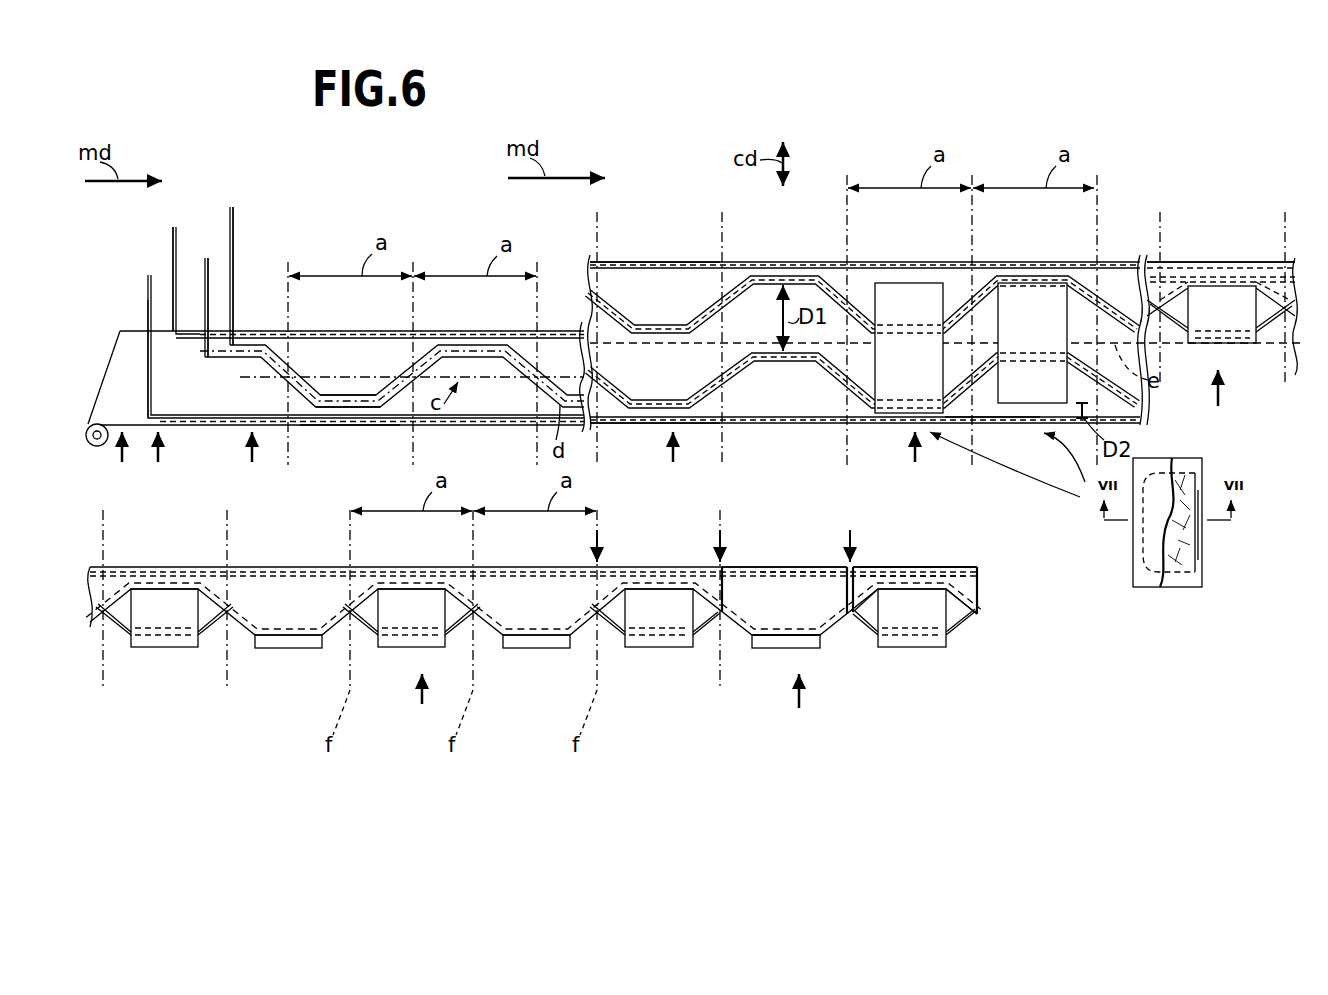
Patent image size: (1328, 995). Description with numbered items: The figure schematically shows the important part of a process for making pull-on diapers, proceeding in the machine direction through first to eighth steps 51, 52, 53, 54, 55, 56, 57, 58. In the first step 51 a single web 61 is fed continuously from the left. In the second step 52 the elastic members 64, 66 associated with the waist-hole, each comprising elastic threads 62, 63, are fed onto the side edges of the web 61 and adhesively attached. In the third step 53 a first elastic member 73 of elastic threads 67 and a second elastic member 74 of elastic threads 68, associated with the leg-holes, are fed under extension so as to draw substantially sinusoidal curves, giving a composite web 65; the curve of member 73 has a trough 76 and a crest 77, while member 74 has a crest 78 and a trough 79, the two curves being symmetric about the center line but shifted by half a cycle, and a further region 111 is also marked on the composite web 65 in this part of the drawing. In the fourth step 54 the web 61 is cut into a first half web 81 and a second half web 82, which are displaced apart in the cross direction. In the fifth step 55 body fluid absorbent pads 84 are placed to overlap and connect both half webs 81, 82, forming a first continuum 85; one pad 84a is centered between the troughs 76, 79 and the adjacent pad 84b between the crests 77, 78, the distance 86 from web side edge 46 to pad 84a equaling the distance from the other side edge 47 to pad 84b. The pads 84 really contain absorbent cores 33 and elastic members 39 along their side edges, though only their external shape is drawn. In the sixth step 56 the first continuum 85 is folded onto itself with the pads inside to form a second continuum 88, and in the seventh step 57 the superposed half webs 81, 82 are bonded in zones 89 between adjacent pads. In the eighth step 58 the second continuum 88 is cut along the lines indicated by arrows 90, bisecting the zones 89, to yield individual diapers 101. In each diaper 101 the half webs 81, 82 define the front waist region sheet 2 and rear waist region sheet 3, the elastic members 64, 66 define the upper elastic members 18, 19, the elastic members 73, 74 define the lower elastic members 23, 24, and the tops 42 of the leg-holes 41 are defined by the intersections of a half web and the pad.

The diaper 101 is at (982, 562).
The front waist region sheet 2 is at (962, 582).
The rear waist region sheet 3 is at (765, 582).
The upper elastic member 18 is at (882, 558).
The upper elastic member 19 is at (805, 558).
The lower elastic member 23 is at (983, 574).
The lower elastic member 24 is at (766, 628).
The body fluid absorbent core 33 is at (1184, 586).
The elastic member 39 is at (1200, 545).
The leg-hole 41 is at (870, 622).
The top of leg-hole 42 is at (958, 612).
The web side edge 46 is at (238, 331).
The web side edge 47 is at (180, 426).
The first step 51 is at (122, 465).
The second step 52 is at (156, 465).
The third step 53 is at (252, 465).
The fourth step 54 is at (671, 464).
The fifth step 55 is at (915, 464).
The sixth step 56 is at (1218, 403).
The seventh step 57 is at (422, 702).
The eighth step 58 is at (800, 704).
The web 61 is at (127, 345).
The elastic threads 62 is at (172, 255).
The elastic threads 63 is at (147, 290).
The elastic member associated with the waist-hole 64 is at (180, 238).
The composite web 65 is at (488, 412).
The elastic member associated with the waist-hole 66 is at (152, 394).
The elastic threads 67 is at (229, 222).
The elastic threads 68 is at (204, 300).
The first elastic member associated with one leg-hole 73 is at (236, 232).
The second elastic member associated with the other leg-hole 74 is at (212, 290).
The trough 76 is at (358, 396).
The crest 77 is at (485, 344).
The crest 78 is at (479, 360).
The trough 79 is at (331, 406).
The first half web 81 is at (615, 260).
The second half web 82 is at (628, 428).
The body fluid absorbent pad 84 is at (1257, 343).
The pad 84a is at (940, 283).
The pad 84b is at (1062, 298).
The first continuum of diapers 85 is at (988, 428).
The distance 86 is at (890, 282).
The second continuum of diapers 88 is at (1226, 260).
The bonding zone 89 is at (474, 584).
The arrow indicating cutting line 90 is at (600, 546).
The folding region 111 is at (380, 428).